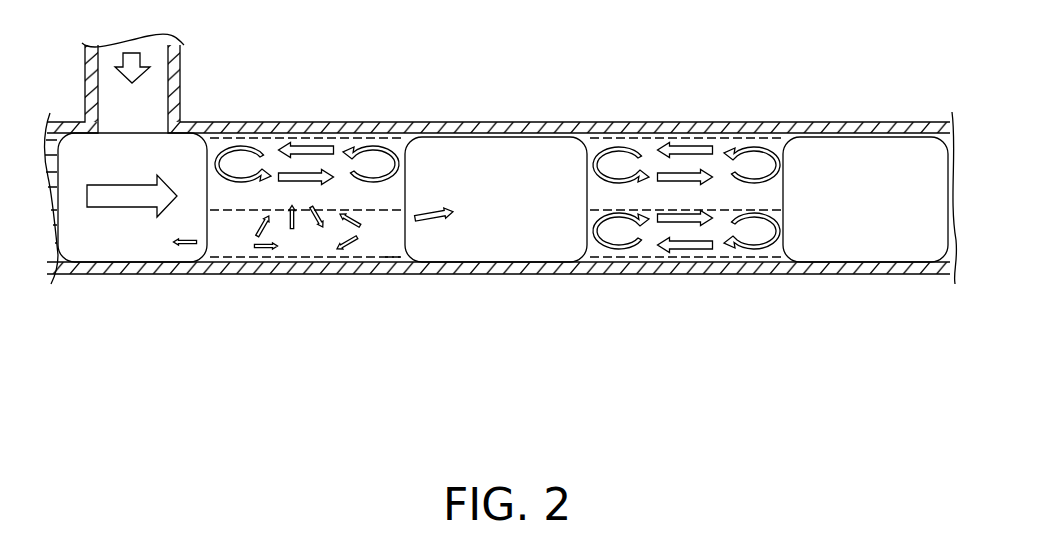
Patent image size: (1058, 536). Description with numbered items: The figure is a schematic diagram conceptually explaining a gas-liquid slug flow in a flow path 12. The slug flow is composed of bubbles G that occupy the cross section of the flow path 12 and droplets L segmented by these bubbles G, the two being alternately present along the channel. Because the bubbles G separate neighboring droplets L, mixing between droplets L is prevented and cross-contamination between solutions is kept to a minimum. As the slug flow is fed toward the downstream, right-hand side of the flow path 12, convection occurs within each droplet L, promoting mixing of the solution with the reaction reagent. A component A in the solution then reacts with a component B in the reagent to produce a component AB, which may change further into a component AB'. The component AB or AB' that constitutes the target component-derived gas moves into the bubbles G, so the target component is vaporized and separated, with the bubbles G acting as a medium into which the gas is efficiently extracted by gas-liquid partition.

The flow path 12 is at (468, 276).
The droplets L is at (205, 116).
The bubbles G is at (585, 116).
The component AB is at (312, 229).